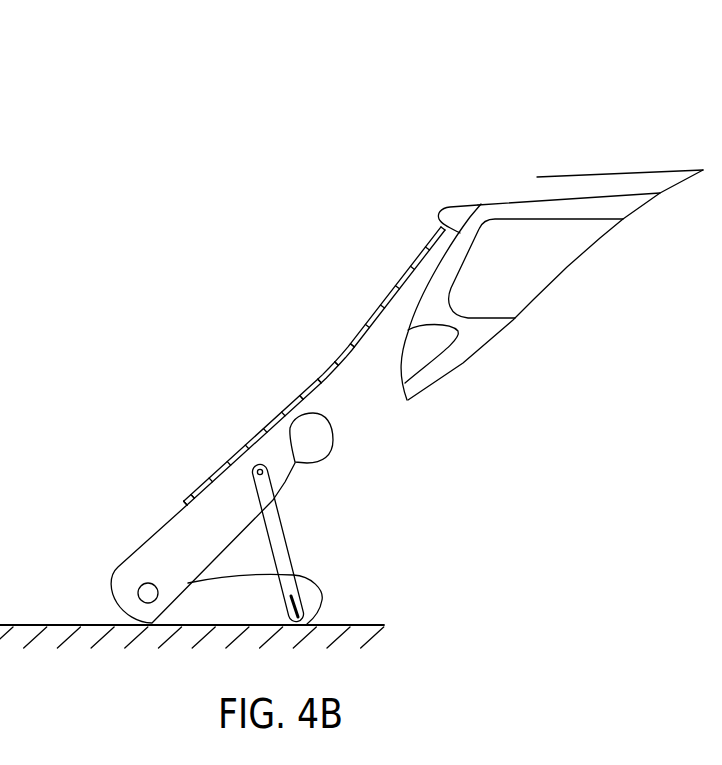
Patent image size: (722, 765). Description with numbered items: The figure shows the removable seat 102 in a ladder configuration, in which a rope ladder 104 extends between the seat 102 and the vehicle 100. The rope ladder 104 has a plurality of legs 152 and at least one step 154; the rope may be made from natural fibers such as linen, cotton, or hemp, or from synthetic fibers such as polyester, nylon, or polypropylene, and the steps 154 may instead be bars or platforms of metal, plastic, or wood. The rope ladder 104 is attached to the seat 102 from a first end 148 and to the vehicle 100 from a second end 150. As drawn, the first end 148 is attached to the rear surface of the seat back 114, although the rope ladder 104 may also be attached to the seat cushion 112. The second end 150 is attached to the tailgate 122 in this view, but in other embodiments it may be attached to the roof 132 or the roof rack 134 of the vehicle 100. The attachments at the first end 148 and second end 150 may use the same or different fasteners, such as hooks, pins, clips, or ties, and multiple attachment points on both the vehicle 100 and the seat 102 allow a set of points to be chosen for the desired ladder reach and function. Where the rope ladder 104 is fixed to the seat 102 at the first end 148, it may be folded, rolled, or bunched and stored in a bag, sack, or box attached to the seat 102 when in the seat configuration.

The vehicle 100 is at (552, 217).
The seat 102 is at (278, 381).
The rope ladder 104 is at (288, 427).
The seat cushion 112 is at (252, 617).
The seat back 114 is at (198, 563).
The tailgate 122 is at (462, 212).
The roof 132 is at (480, 205).
The roof rack 134 is at (525, 198).
The first end 148 is at (186, 503).
The second end 150 is at (446, 229).
The legs 152 is at (340, 378).
The step 154 is at (323, 383).